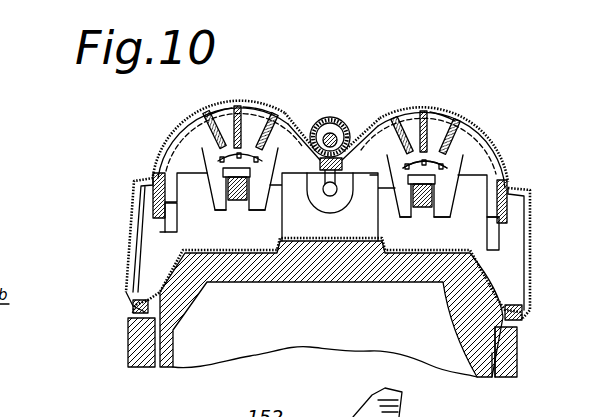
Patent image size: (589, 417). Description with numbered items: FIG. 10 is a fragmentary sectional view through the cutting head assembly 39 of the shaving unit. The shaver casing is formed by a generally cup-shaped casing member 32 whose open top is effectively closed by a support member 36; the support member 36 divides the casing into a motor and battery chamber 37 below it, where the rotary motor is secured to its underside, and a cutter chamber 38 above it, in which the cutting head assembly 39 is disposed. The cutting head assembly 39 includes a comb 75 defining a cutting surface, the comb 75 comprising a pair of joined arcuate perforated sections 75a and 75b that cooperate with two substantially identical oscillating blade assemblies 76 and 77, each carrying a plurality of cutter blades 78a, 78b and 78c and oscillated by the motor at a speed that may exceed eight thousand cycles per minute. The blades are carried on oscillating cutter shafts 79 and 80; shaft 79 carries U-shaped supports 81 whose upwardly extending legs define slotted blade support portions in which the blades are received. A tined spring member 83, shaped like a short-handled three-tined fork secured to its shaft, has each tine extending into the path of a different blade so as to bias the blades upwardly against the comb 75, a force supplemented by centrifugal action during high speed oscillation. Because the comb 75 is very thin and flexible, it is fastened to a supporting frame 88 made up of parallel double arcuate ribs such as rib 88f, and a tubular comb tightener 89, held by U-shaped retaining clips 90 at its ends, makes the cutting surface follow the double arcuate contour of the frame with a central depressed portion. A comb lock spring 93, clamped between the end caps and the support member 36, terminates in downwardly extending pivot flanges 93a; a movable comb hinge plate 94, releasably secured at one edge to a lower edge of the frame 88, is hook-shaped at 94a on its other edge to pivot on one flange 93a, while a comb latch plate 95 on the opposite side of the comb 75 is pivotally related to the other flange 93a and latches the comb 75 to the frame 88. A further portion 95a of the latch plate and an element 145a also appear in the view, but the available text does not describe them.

The cup-shaped casing member 32 is at (517, 348).
The support member 36 is at (427, 277).
The motor and battery chamber 37 is at (488, 375).
The cutter chamber 38 is at (187, 147).
The cutting head assembly 39 is at (499, 130).
The comb 75 is at (263, 119).
The arcuate perforated section 75a is at (217, 107).
The arcuate perforated section 75b is at (450, 115).
The oscillating blade assembly 76 is at (296, 150).
The oscillating blade assembly 77 is at (462, 165).
The cutter blade 78a is at (281, 117).
The cutter blade 78b is at (238, 106).
The cutter blade 78c is at (203, 113).
The oscillating cutter shaft 79 is at (238, 200).
The oscillating cutter shaft 80 is at (423, 207).
The U-shaped support 81 is at (218, 192).
The tined spring member 83 is at (263, 200).
The supporting frame 88 is at (150, 182).
The rib 88f is at (364, 136).
The tubular comb tightener 89 is at (332, 117).
The U-shaped retaining clip 90 is at (308, 192).
The comb lock spring 93 is at (478, 263).
The pivot flange 93a is at (128, 320).
The comb hinge plate 94 is at (127, 208).
The hook-shaped edge 94a is at (127, 305).
The comb latch plate 95 is at (532, 214).
The right flange 95a is at (517, 183).
The adjacent member 145a is at (367, 393).